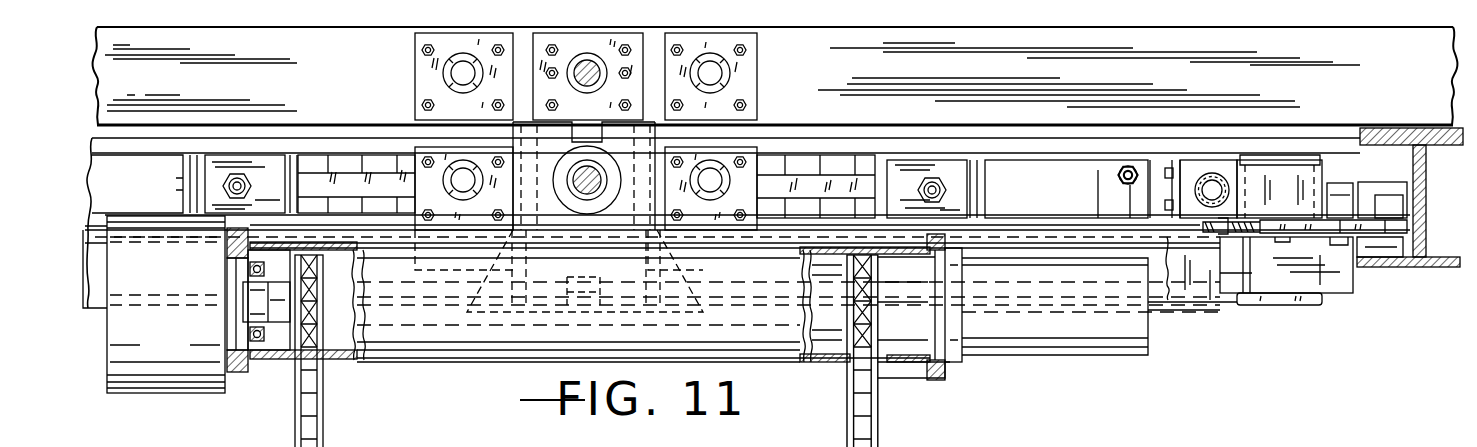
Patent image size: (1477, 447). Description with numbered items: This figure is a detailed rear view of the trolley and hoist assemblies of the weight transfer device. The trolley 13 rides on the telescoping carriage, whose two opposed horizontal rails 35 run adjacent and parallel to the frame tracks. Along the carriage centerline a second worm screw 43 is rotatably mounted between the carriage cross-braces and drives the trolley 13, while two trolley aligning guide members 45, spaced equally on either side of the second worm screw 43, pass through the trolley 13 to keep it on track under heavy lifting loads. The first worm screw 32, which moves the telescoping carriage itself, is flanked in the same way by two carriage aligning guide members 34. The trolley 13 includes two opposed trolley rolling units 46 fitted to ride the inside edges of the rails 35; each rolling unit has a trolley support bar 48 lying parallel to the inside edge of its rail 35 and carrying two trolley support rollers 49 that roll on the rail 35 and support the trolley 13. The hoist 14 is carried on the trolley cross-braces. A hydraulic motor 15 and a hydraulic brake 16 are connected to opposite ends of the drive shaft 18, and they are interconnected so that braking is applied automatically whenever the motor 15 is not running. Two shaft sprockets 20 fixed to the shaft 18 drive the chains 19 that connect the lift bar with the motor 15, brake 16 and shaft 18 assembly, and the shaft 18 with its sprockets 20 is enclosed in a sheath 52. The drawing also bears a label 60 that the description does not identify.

The trolley 13 is at (1279, 305).
The hoist 14 is at (908, 380).
The hydraulic motor 15 is at (1070, 336).
The hydraulic brake 16 is at (173, 338).
The drive shaft 18 is at (803, 352).
The chains 19 is at (878, 423).
The shaft sprockets 20 is at (330, 312).
The first worm screw 32 is at (573, 93).
The carriage aligning guide members 34 is at (443, 76).
The rails 35 is at (1432, 127).
The second worm screw 43 is at (572, 196).
The trolley aligning guide members 45 is at (445, 168).
The trolley rolling units 46 is at (1340, 172).
The trolley support bar 48 is at (1307, 305).
The trolley support rollers 49 is at (1398, 268).
The sheath 52 is at (818, 366).
The support 60 is at (1131, 437).